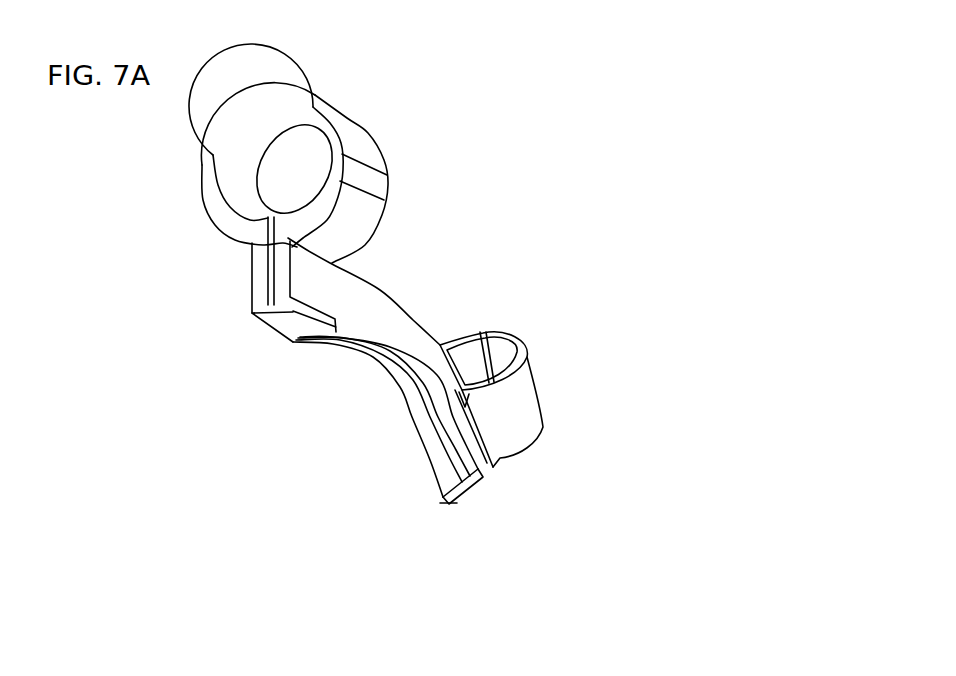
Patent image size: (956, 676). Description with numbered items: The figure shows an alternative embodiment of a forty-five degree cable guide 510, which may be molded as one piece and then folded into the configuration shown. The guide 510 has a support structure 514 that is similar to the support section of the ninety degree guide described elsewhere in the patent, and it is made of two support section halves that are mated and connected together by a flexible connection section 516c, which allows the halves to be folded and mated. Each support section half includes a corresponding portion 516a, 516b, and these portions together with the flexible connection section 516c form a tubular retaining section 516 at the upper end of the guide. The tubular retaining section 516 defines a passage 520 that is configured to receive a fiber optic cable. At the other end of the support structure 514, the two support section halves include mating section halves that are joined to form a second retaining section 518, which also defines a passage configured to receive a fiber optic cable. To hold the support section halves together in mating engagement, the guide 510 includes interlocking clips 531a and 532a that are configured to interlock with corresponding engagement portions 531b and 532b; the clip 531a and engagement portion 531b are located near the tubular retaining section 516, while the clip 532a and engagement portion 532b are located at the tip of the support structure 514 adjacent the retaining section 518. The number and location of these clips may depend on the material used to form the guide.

The cable guide 510 is at (496, 184).
The support structure 514 is at (355, 365).
The tubular retaining section 516 is at (183, 192).
The portion 516a is at (237, 225).
The portion 516b is at (348, 223).
The flexible connection section 516c is at (272, 85).
The retaining section 518 is at (528, 460).
The passage 520 is at (297, 157).
The interlocking clip 531a is at (298, 322).
The engagement portion 531b is at (295, 297).
The interlocking clip 532a is at (467, 488).
The engagement portion 532b is at (465, 477).